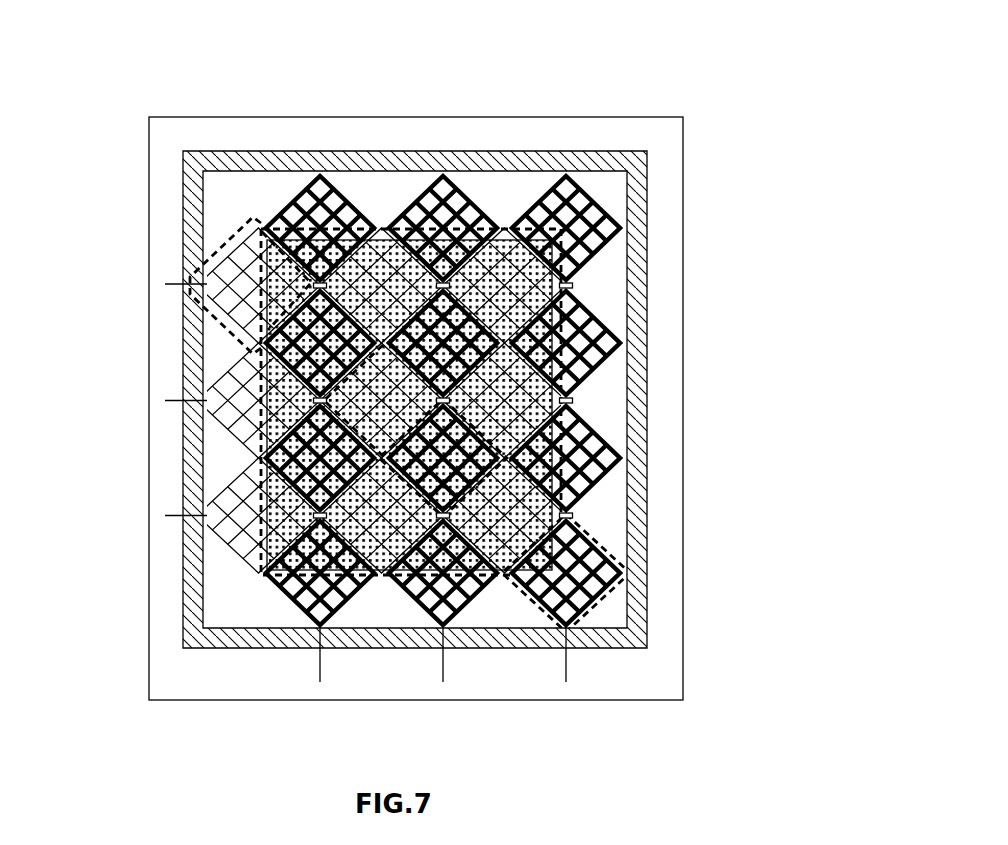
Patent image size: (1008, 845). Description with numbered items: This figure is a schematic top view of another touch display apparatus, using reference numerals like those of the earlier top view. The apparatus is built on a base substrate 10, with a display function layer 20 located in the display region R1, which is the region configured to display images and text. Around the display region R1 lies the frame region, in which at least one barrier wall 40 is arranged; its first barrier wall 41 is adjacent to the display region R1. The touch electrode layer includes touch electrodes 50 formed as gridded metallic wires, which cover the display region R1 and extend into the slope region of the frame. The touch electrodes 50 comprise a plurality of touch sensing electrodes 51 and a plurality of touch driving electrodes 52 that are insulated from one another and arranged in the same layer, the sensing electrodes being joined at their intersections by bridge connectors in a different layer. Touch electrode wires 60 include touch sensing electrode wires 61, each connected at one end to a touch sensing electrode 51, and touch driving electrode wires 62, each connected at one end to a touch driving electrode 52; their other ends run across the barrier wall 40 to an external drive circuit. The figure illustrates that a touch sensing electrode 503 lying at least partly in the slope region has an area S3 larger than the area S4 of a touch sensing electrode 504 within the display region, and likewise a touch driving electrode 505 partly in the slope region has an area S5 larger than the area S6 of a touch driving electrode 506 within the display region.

The base substrate 10 is at (668, 236).
The display function layer 20 is at (563, 288).
The barrier wall 40 is at (488, 399).
The first barrier wall 41 is at (650, 642).
The touch electrodes 50 is at (585, 60).
The touch sensing electrodes 51 is at (492, 258).
The touch driving electrodes 52 is at (567, 232).
The touch electrode wires 60 is at (62, 388).
The touch sensing electrode wires 61 is at (165, 401).
The touch driving electrode wires 62 is at (320, 666).
The touch sensing electrode 503 is at (244, 212).
The touch sensing electrode 504 is at (385, 343).
The touch driving electrode 505 is at (607, 538).
The touch driving electrode 506 is at (462, 420).
The display region R1 is at (386, 578).